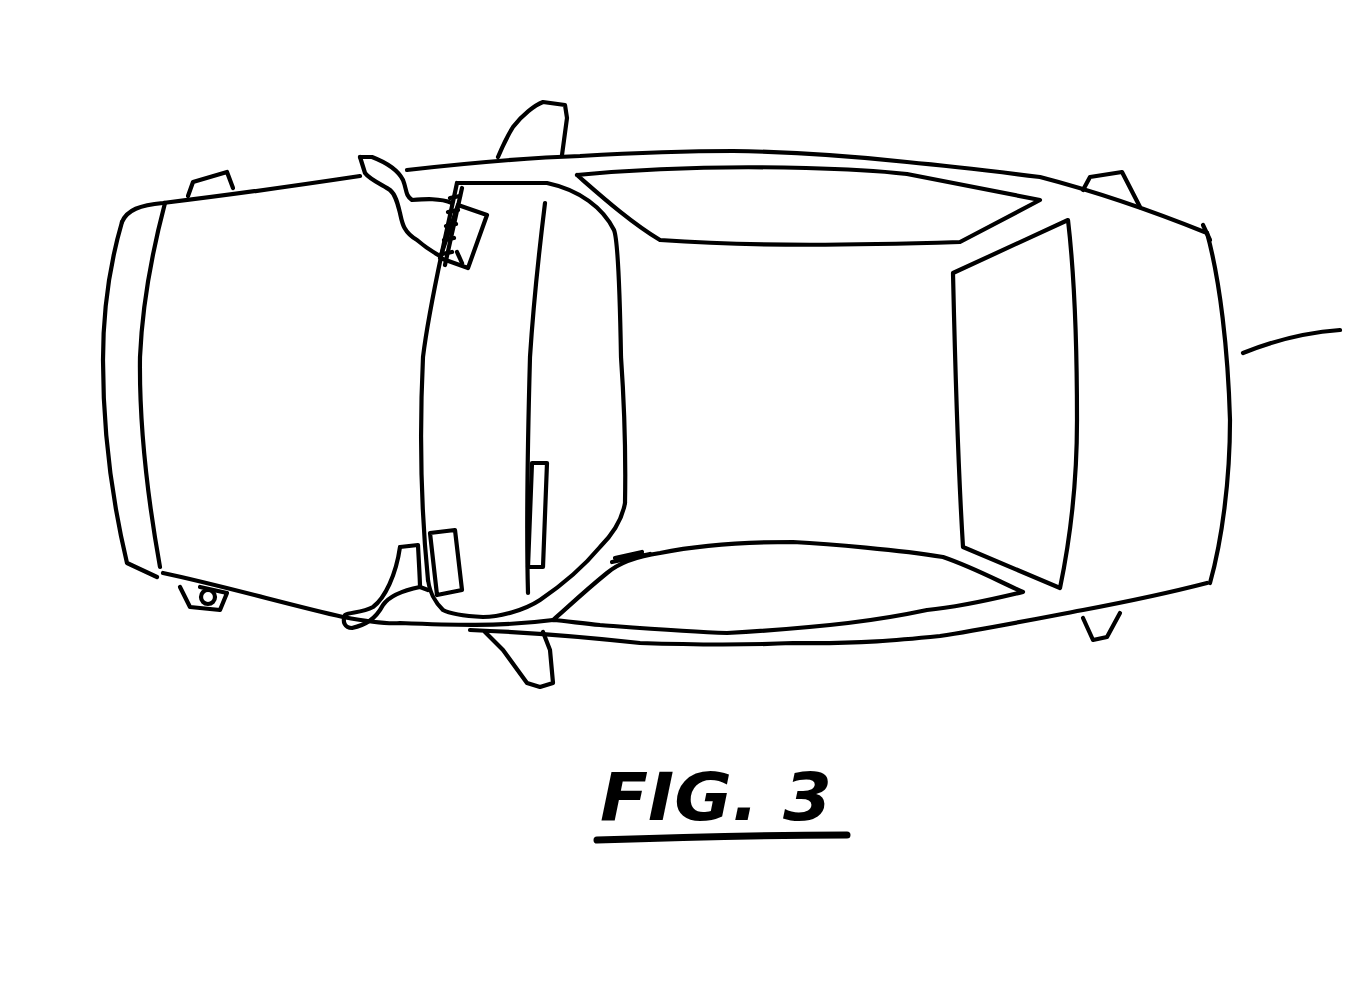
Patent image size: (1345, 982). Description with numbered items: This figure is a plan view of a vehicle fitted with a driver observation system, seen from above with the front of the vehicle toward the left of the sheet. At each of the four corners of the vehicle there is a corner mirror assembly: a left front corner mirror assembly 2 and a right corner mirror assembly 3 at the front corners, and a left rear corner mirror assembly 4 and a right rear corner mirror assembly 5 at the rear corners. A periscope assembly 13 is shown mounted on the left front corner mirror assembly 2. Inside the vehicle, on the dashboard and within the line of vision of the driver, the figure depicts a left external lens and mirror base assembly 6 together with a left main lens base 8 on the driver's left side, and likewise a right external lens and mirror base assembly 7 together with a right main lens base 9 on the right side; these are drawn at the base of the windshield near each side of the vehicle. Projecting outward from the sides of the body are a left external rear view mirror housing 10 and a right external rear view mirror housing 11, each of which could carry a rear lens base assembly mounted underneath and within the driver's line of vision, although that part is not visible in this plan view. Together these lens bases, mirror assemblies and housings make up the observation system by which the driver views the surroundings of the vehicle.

The left front corner mirror assembly 2 is at (197, 618).
The right corner mirror assembly 3 is at (205, 175).
The left rear corner mirror assembly 4 is at (1113, 623).
The right rear corner mirror assembly 5 is at (1123, 170).
The left external lens and mirror base assembly 6 is at (380, 620).
The right external lens and mirror base assembly 7 is at (407, 167).
The left main lens base 8 is at (467, 570).
The right main lens base 9 is at (450, 272).
The left external rear view mirror housing 10 is at (557, 683).
The right external rear view mirror housing 11 is at (553, 93).
The periscope assembly 13 is at (207, 590).